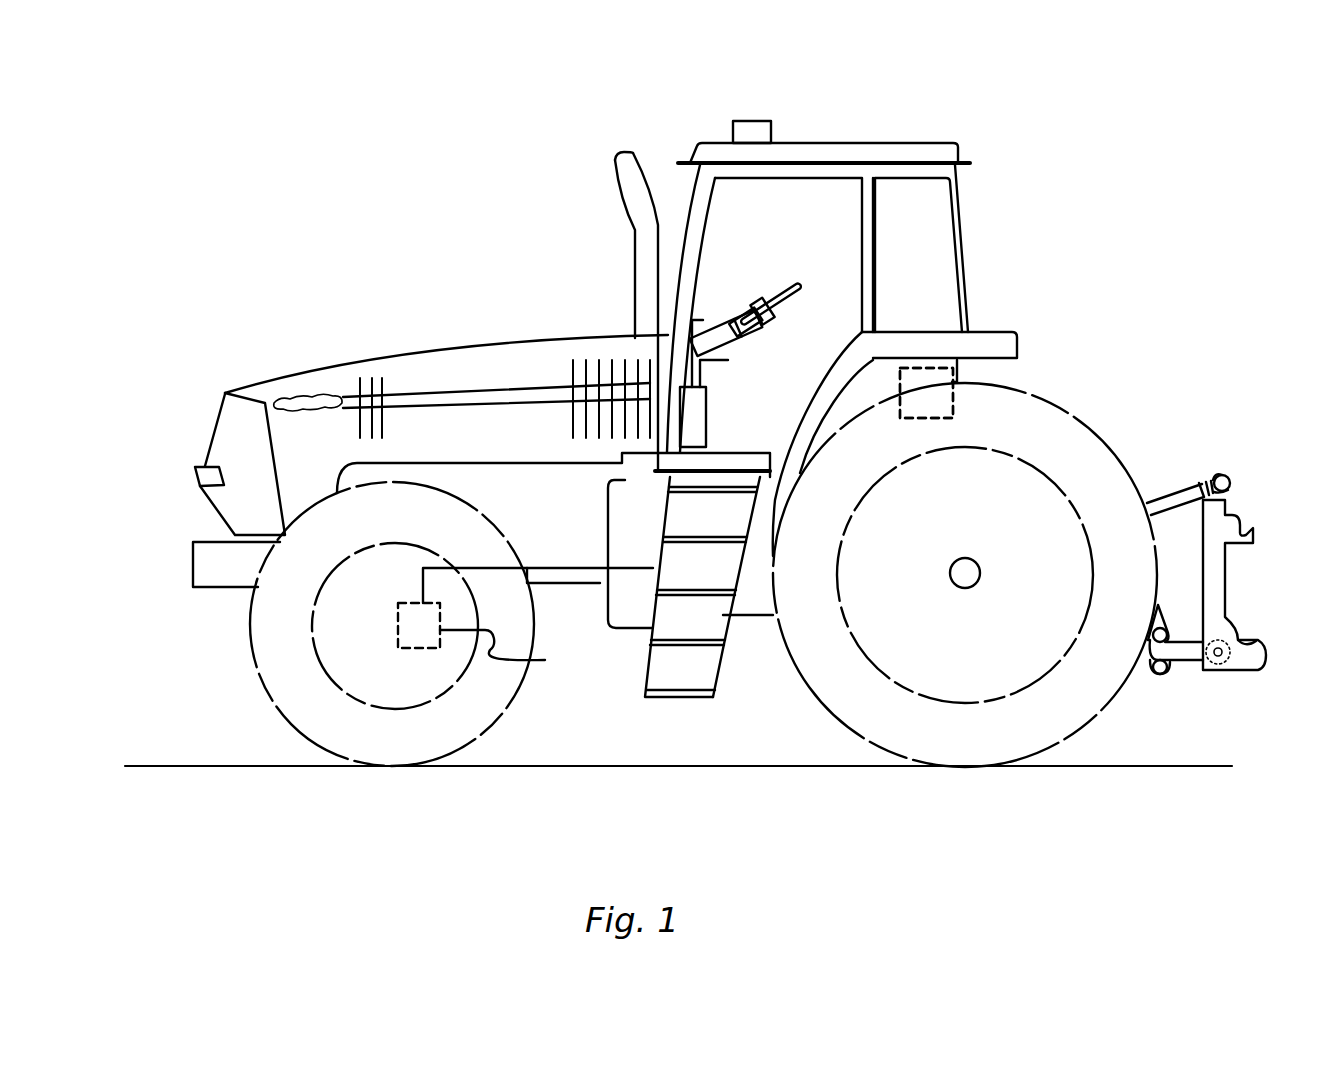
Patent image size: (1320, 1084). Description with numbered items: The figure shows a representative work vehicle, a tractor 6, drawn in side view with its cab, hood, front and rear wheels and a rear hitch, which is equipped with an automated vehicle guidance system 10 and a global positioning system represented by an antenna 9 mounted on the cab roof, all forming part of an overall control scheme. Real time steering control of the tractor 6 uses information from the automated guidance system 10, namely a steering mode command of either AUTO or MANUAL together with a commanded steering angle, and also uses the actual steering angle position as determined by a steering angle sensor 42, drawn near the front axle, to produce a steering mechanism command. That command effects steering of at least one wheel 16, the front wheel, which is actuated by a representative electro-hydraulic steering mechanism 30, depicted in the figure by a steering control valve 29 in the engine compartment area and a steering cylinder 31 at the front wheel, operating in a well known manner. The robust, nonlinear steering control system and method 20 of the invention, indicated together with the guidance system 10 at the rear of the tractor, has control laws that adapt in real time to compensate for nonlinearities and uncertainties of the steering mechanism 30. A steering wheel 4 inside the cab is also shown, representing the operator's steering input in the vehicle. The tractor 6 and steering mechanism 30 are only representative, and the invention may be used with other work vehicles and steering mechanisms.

The steering wheel 4 is at (774, 302).
The tractor 6 is at (1038, 128).
The antenna 9 is at (757, 119).
The automated vehicle guidance system 10 is at (953, 400).
The steering control system 20 is at (953, 400).
The wheel 16 is at (285, 673).
The steering control valve 29 is at (692, 426).
The electro-hydraulic steering mechanism 30 is at (716, 396).
The steering cylinder 31 is at (398, 628).
The steering angle sensor 42 is at (515, 656).